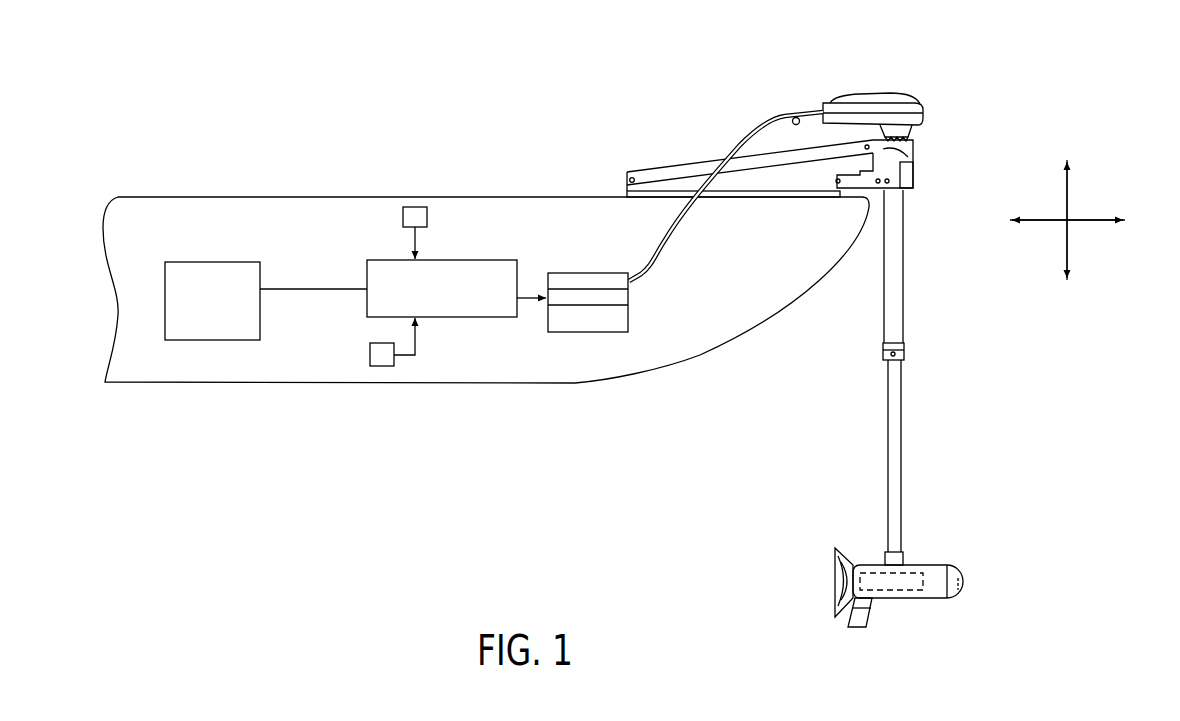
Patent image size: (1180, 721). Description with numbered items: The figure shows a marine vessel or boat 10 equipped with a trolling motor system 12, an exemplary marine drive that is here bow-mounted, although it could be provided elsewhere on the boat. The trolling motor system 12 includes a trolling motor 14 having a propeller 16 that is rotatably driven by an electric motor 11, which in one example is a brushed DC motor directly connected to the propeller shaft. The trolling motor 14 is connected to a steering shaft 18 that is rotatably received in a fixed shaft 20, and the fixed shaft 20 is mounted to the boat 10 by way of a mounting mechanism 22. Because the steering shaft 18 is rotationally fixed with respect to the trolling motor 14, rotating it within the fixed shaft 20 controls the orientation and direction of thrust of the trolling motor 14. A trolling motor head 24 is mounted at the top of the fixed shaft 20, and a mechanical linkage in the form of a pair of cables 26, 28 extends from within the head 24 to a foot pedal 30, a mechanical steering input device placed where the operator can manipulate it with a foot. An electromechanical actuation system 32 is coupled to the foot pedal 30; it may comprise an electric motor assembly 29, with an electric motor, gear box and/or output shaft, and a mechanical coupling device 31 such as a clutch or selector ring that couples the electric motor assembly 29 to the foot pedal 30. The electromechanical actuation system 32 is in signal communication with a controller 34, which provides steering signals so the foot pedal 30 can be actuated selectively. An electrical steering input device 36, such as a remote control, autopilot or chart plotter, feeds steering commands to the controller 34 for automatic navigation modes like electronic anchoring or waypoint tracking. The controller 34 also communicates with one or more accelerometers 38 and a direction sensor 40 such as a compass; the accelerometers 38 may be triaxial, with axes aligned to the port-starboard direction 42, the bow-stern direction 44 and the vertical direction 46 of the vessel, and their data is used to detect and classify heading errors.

The boat 10 is at (718, 336).
The electric motor 11 is at (907, 590).
The trolling motor system 12 is at (914, 68).
The trolling motor 14 is at (930, 565).
The propeller 16 is at (838, 552).
The steering shaft 18 is at (901, 469).
The fixed shaft 20 is at (895, 295).
The mounting mechanism 22 is at (877, 193).
The trolling motor head 24 is at (925, 112).
The cable 26 is at (764, 122).
The cable 28 is at (797, 110).
The electric motor assembly 29 is at (627, 320).
The foot pedal 30 is at (579, 275).
The mechanical coupling device 31 is at (623, 298).
The electromechanical actuation system 32 is at (541, 322).
The controller 34 is at (452, 260).
The electrical steering input device 36 is at (208, 262).
The accelerometer 38 is at (403, 216).
The direction sensor 40 is at (370, 354).
The port-starboard direction 42 is at (1072, 217).
The bow-stern direction 44 is at (1087, 222).
The vertical direction 46 is at (1065, 234).